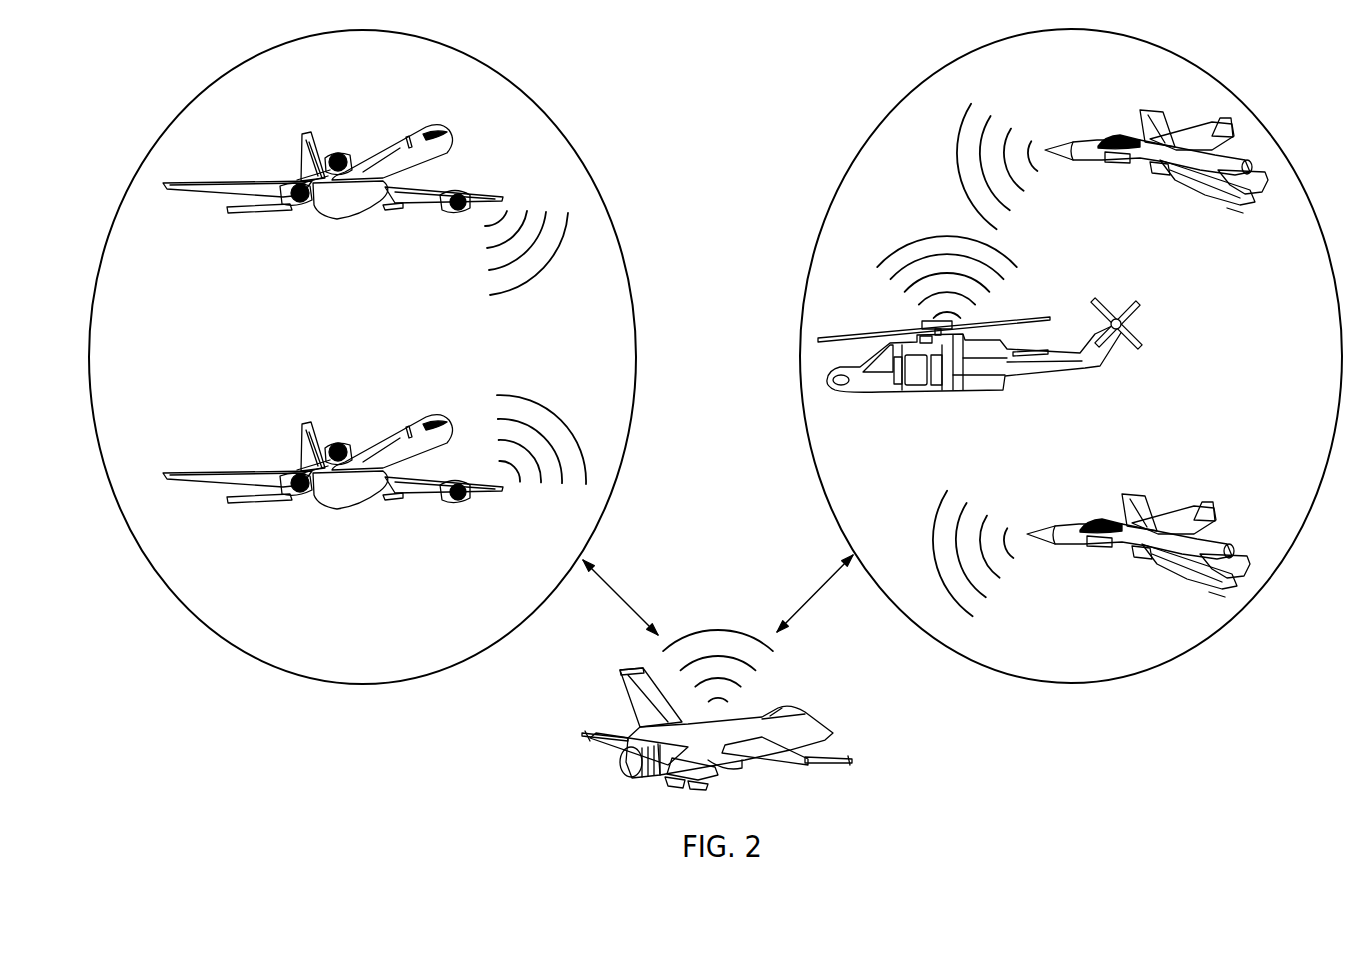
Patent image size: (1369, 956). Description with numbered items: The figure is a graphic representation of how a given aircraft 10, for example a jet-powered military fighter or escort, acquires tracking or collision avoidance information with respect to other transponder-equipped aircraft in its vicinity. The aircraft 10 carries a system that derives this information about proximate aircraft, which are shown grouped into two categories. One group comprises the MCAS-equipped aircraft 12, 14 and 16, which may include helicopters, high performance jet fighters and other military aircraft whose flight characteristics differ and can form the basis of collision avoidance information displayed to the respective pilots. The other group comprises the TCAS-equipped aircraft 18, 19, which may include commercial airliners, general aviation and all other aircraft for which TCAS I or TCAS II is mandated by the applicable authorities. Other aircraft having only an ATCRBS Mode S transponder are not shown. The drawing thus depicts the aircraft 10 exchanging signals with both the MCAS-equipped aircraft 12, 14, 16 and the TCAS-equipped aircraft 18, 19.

The aircraft 10 is at (802, 713).
The MCAS-equipped aircraft 12 is at (1075, 140).
The MCAS-equipped aircraft 14 is at (1045, 378).
The MCAS-equipped aircraft 16 is at (1077, 543).
The TCAS-equipped aircraft 18 is at (362, 158).
The TCAS-equipped aircraft 19 is at (362, 448).